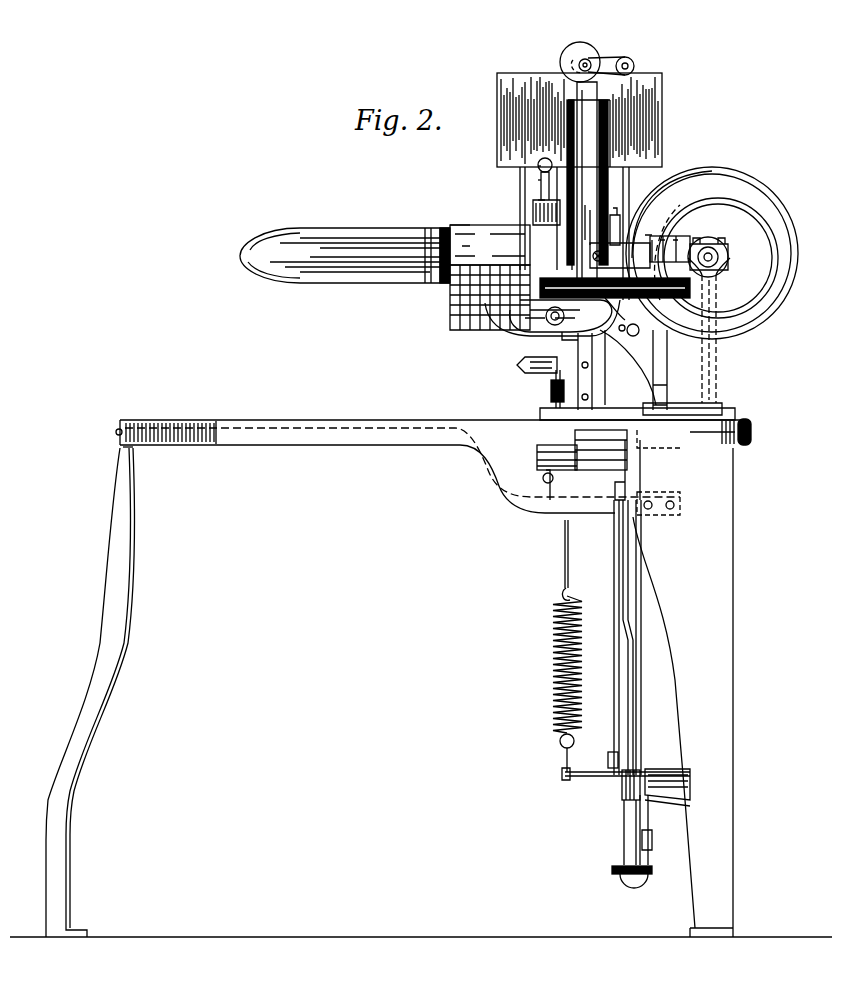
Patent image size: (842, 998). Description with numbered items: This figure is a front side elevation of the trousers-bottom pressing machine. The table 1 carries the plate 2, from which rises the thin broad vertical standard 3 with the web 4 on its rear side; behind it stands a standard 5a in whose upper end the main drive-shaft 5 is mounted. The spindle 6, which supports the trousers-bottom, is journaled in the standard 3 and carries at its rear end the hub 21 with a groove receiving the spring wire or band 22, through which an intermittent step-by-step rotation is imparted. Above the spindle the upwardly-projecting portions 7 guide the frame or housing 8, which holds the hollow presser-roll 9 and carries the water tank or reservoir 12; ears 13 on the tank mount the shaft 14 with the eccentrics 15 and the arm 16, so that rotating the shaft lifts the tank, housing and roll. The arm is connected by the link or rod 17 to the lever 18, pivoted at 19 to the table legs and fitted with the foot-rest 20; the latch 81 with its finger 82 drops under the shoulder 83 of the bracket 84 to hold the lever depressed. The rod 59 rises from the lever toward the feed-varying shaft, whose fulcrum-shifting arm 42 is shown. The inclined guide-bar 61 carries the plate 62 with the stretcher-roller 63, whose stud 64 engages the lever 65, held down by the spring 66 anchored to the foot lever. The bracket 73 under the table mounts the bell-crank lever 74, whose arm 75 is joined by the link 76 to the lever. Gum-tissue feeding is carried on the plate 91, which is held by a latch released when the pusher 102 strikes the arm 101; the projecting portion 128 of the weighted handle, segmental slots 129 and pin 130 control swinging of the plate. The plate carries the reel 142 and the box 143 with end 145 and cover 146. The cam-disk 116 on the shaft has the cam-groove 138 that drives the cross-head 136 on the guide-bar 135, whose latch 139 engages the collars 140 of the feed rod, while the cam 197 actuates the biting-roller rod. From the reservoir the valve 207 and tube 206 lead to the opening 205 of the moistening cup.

The table 1 is at (354, 441).
The plate 2 is at (750, 418).
The vertical standard 3 is at (590, 353).
The web 4 is at (628, 367).
The main drive-shaft 5 is at (722, 256).
The standard 5a is at (756, 359).
The spindle 6 is at (384, 240).
The upwardly-projecting portion 7 is at (587, 186).
The frame or housing 8 is at (610, 152).
The presser-roll 9 is at (540, 192).
The water tank or reservoir 12 is at (620, 118).
The ear 13 is at (565, 62).
The shaft 14 is at (588, 60).
The eccentric 15 is at (580, 46).
The arm 16 is at (618, 59).
The link or rod 17 is at (630, 178).
The lever 18 is at (624, 792).
The pivot 19 is at (614, 778).
The foot-rest 20 is at (620, 866).
The hub 21 is at (580, 225).
The spring wire or band 22 is at (614, 223).
The arm 42 is at (660, 353).
The rod 59 is at (640, 679).
The inclined guide-bar 61 is at (540, 338).
The plate 62 is at (548, 394).
The stretcher-roller 63 is at (517, 362).
The stud 64 is at (590, 399).
The lever 65 is at (560, 390).
The spring 66 is at (552, 641).
The bracket 73 is at (588, 468).
The bell-crank lever 74 is at (537, 457).
The arm 75 is at (640, 472).
The link 76 is at (622, 592).
The latch 81 is at (652, 844).
The finger 82 is at (612, 764).
The shoulder 83 is at (662, 800).
The bracket 84 is at (666, 768).
The plate 91 is at (500, 333).
The arm 101 is at (620, 331).
The pusher 102 is at (630, 336).
The cam-disk 116 is at (712, 253).
The projecting portion 128 is at (555, 305).
The segmental slot 129 is at (612, 299).
The pin 130 is at (578, 336).
The guide-bar 135 is at (620, 255).
The cross-head 136 is at (686, 236).
The cam-groove 138 is at (690, 185).
The latch 139 is at (655, 238).
The collar 140 is at (652, 240).
The reel 142 is at (485, 312).
The box 143 is at (468, 210).
The end 145 is at (510, 240).
The cover 146 is at (490, 245).
The cam 197 is at (726, 262).
The opening 205 is at (540, 201).
The tube 206 is at (540, 181).
The valve 207 is at (540, 168).